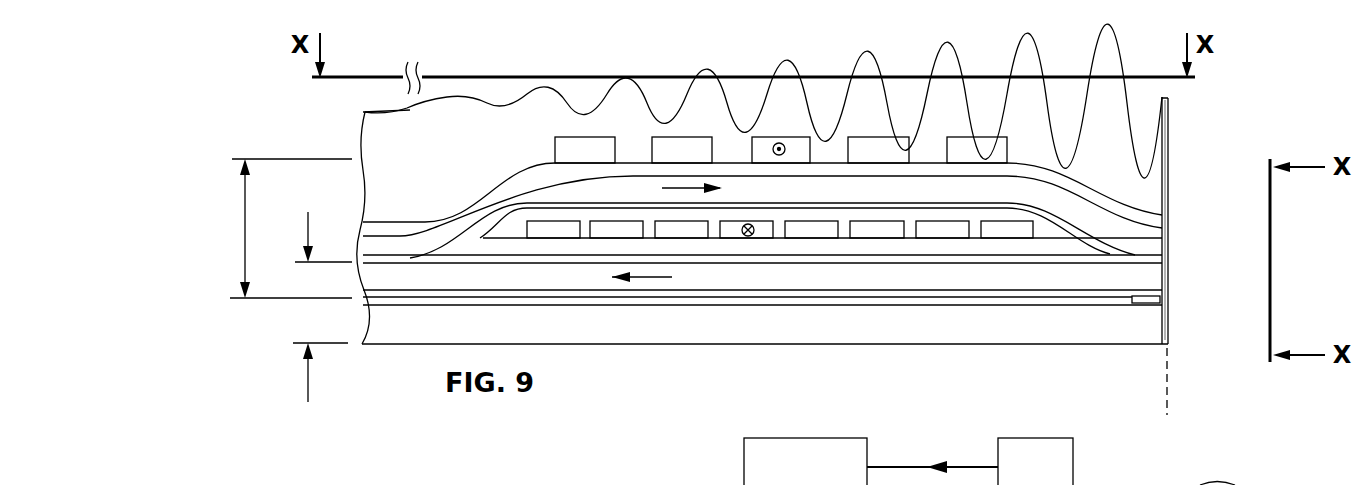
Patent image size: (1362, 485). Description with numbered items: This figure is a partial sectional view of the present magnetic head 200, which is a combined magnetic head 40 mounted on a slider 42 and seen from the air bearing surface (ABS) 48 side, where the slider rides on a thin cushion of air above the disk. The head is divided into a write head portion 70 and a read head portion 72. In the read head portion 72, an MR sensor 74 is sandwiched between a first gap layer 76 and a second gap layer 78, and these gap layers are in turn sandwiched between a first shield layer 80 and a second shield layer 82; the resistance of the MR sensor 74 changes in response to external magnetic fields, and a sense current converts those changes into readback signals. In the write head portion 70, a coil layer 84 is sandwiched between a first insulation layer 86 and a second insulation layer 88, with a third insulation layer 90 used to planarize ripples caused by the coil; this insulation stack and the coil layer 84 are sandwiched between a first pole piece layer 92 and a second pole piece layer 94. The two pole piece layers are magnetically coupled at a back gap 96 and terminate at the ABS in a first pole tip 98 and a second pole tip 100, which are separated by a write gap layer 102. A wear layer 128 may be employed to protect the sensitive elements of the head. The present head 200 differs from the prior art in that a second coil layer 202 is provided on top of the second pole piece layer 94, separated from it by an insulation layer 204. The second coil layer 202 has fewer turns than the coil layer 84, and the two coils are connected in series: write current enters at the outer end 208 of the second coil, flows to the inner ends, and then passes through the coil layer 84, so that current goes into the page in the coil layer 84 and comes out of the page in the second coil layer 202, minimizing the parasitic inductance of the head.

The combined magnetic head 40 is at (345, 127).
The slider 42 is at (1145, 118).
The air bearing surface (ABS) 48 is at (1211, 381).
The write head portion 70 is at (282, 228).
The read head portion 72 is at (314, 410).
The MR sensor 74 is at (1162, 301).
The first gap layer 76 is at (1088, 307).
The second gap layer 78 is at (795, 292).
The first shield layer 80 is at (642, 328).
The second shield layer 82 is at (762, 330).
The first pole piece layer 92 is at (902, 277).
The coil layer 84 is at (826, 227).
The first insulation layer 86 is at (705, 243).
The second insulation layer 88 is at (1048, 232).
The third insulation layer 90 is at (632, 205).
The second pole piece layer 94 is at (925, 187).
The back gap 96 is at (393, 232).
The first pole tip 98 is at (1165, 281).
The second pole tip 100 is at (1160, 238).
The write gap layer 102 is at (1162, 261).
The wear layer 128 is at (1168, 153).
The magnetic head 200 is at (1193, 96).
The second coil layer 202 is at (792, 135).
The insulation layer 204 is at (472, 197).
The outer end 208 is at (1055, 458).